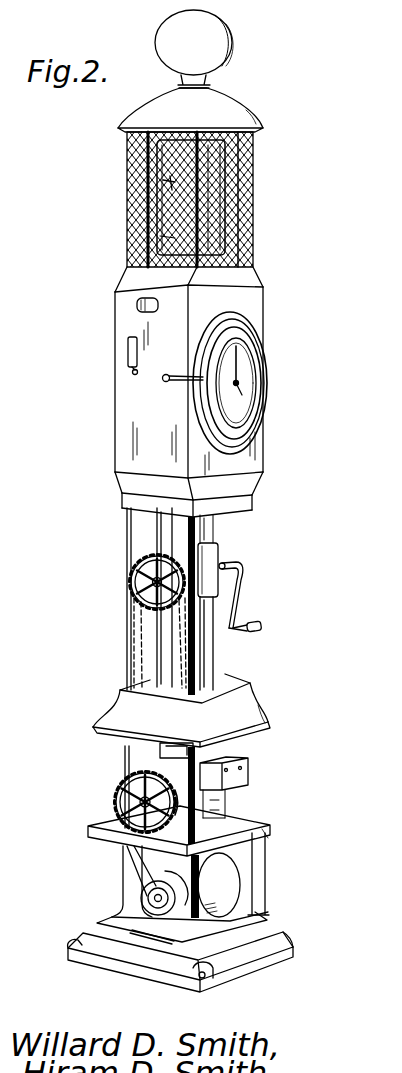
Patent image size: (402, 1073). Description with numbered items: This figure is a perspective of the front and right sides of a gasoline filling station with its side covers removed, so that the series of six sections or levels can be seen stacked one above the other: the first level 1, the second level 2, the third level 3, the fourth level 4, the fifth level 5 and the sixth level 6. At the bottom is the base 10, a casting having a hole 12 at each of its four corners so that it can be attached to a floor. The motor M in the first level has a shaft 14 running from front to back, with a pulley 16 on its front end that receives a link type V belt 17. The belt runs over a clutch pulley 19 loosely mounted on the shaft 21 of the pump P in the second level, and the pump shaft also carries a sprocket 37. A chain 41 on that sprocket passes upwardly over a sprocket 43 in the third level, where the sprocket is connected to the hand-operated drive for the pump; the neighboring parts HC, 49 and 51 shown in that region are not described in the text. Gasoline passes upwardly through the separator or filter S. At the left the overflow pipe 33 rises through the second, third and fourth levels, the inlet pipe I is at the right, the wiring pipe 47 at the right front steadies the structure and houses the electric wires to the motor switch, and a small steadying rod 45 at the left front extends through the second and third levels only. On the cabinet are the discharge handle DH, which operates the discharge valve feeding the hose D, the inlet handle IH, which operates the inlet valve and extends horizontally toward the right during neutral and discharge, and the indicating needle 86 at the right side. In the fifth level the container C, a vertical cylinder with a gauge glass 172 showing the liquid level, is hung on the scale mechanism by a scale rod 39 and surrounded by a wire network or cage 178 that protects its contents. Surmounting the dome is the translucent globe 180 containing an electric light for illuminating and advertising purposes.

The translucent globe 180 is at (211, 55).
The sixth level 6 is at (115, 119).
The fifth level 5 is at (194, 199).
The wire network or cage 178 is at (255, 210).
The gauge glass 172 is at (257, 182).
The container C is at (127, 180).
The scale rod 39 is at (133, 238).
The fourth level 4 is at (107, 442).
The hose D is at (135, 304).
The discharge handle DH is at (127, 352).
The inlet handle IH is at (175, 383).
The indicating needle 86 is at (267, 357).
The overflow pipe 33 is at (163, 530).
The inlet pipe I is at (213, 535).
The wiring pipe 47 is at (192, 672).
The sleeve 49 is at (210, 587).
The hand crank HC is at (238, 612).
The gear wheel 51 is at (128, 584).
The sprocket 43 is at (132, 597).
The steadying rod 45 is at (125, 642).
The chain 41 is at (133, 673).
The third level 3 is at (235, 648).
The separator S is at (203, 748).
The second level 2 is at (244, 782).
The pump P is at (222, 783).
The sprocket 37 is at (163, 808).
The clutch pulley 19 is at (111, 798).
The pump shaft 21 is at (140, 802).
The link type V belt 17 is at (128, 858).
The motor shaft 14 is at (157, 897).
The motor M is at (190, 887).
The first level 1 is at (242, 883).
The base 10 is at (184, 970).
The pulley 16 is at (152, 930).
The hole 12 is at (67, 950).